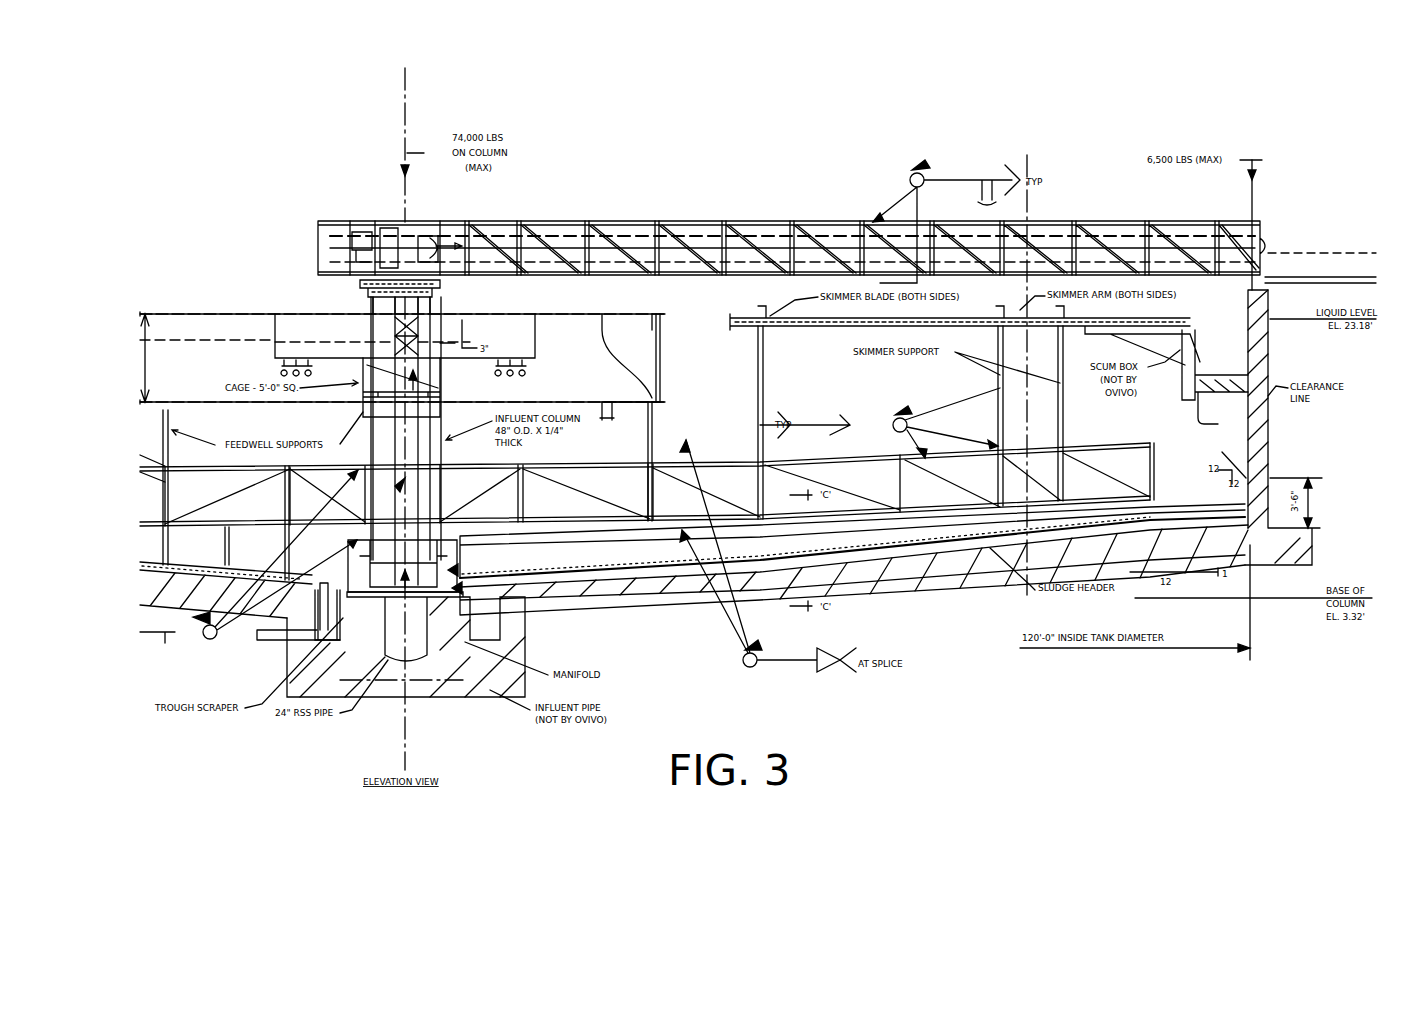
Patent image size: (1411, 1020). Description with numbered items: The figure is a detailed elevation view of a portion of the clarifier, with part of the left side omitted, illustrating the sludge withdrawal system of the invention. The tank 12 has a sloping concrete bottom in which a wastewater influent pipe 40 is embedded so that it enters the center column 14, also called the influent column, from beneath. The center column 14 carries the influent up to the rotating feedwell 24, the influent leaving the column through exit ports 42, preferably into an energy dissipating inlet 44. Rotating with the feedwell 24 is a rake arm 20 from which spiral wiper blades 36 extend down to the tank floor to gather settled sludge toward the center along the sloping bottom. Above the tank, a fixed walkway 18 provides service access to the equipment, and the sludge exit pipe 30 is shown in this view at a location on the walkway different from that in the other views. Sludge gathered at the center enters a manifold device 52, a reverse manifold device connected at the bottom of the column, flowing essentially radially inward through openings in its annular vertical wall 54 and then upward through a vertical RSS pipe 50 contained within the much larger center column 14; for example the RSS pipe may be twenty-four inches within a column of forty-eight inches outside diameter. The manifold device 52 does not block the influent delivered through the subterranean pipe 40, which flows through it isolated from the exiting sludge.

The tank 12 is at (1272, 442).
The center column 14 is at (430, 343).
The fixed walkway 18 is at (1100, 228).
The rake arm 20 is at (1100, 450).
The feedwell 24 is at (662, 345).
The sludge exit pipe 30 is at (404, 233).
The spiral wiper blades 36 is at (893, 548).
The influent pipe 40 is at (440, 642).
The exit ports 42 is at (264, 354).
The energy dissipating inlet 44 is at (604, 324).
The RSS pipe 50 is at (443, 408).
The manifold device 52 is at (378, 600).
The annular vertical wall 54 is at (345, 556).